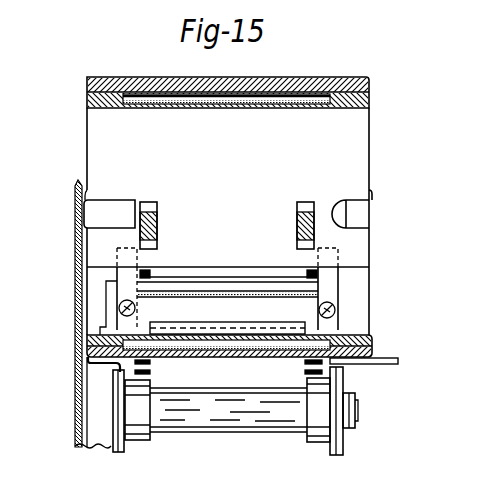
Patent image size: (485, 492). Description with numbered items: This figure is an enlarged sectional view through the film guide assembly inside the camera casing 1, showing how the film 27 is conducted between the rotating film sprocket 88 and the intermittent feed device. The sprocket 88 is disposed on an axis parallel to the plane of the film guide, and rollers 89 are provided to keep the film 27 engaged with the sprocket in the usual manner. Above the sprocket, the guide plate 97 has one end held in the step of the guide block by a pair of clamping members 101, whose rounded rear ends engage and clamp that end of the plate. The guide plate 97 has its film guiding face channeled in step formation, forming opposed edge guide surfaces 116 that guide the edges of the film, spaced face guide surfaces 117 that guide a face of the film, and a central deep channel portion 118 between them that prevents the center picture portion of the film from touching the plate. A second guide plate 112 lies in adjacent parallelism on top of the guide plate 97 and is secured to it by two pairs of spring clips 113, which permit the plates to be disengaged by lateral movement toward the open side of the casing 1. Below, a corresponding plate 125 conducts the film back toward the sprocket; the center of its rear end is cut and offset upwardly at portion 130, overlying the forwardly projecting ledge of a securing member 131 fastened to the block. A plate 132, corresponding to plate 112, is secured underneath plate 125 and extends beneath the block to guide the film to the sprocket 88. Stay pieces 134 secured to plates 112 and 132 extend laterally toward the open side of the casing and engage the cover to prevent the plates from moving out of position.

The camera casing 1 is at (78, 296).
The film 27 is at (228, 93).
The film sprocket 88 is at (318, 276).
The rollers 89 is at (248, 431).
The guide plate 97 is at (372, 98).
The clamping members 101 is at (158, 222).
The guide plate 112 is at (345, 86).
The spring clips 113 is at (87, 213).
The edge guide surfaces 116 is at (137, 95).
The face guide surfaces 117 is at (150, 97).
The central deep channel portion 118 is at (247, 103).
The plate 125 is at (90, 346).
The off-set portion 130 is at (305, 327).
The securing member 131 is at (305, 308).
The plate 132 is at (98, 363).
The stay pieces 134 is at (398, 363).